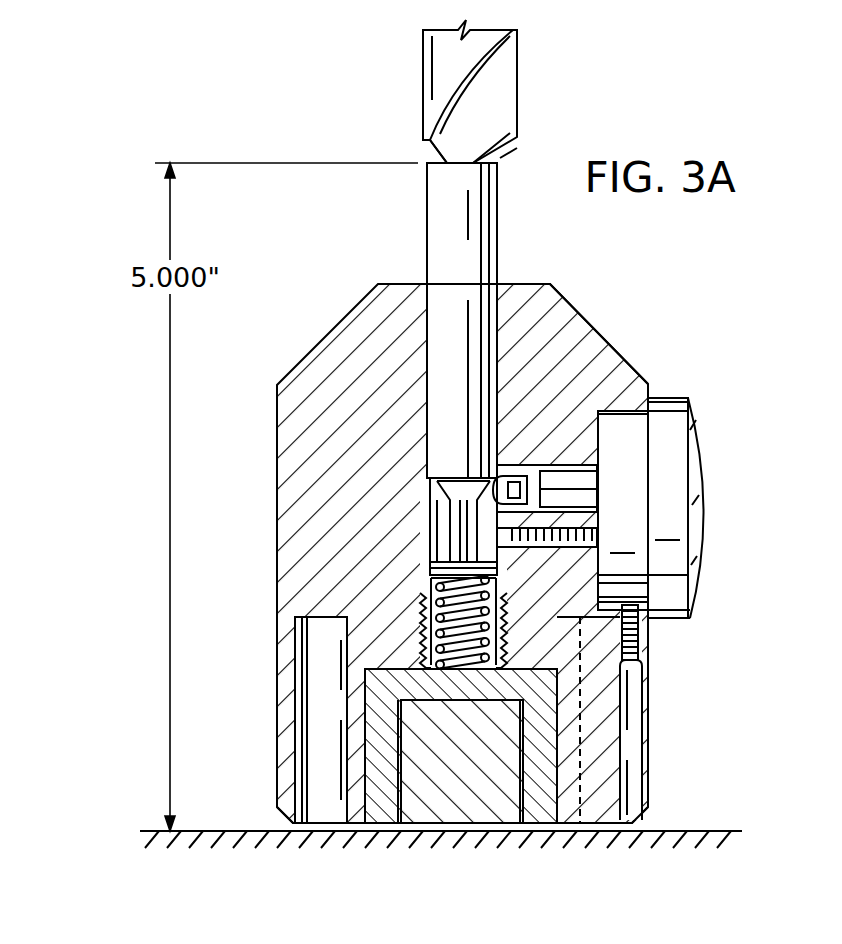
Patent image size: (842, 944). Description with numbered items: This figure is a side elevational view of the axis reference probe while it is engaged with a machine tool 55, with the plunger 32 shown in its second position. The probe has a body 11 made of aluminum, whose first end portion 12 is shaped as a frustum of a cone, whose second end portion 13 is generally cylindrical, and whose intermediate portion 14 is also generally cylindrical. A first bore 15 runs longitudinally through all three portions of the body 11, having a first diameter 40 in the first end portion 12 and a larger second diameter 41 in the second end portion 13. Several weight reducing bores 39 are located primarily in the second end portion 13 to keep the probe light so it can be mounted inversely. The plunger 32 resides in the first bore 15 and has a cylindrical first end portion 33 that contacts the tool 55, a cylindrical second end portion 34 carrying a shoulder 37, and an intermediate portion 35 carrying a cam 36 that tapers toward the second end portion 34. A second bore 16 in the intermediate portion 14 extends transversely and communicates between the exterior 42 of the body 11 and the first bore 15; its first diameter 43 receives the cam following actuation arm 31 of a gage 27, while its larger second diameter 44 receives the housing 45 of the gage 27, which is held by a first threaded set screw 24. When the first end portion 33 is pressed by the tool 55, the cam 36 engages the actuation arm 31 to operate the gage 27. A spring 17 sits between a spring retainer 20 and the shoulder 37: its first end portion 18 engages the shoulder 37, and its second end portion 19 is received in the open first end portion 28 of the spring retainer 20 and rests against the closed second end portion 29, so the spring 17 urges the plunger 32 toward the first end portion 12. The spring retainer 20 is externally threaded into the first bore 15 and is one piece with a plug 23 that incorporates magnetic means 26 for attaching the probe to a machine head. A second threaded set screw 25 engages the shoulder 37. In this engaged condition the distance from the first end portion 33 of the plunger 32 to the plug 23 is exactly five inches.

The body 11 is at (270, 403).
The first end portion of the body 12 is at (558, 296).
The second end portion of the body 13 is at (283, 790).
The intermediate portion of the body 14 is at (272, 577).
The first bore 15 is at (441, 335).
The second bore 16 is at (604, 487).
The spring 17 is at (507, 647).
The first end portion of the spring 18 is at (602, 578).
The second end portion of the spring 19 is at (395, 695).
The spring retainer 20 is at (412, 646).
The plug 23 is at (566, 755).
The first threaded set screw 24 is at (627, 637).
The second threaded set screw 25 is at (500, 553).
The magnetic means 26 is at (462, 806).
The gage 27 is at (705, 595).
The first end portion of the spring retainer 28 is at (422, 603).
The second end portion of the spring retainer 29 is at (523, 694).
The cam following actuation arm 31 is at (515, 478).
The plunger 32 is at (418, 190).
The first end portion of the plunger 33 is at (443, 162).
The second end portion of the plunger 34 is at (465, 580).
The intermediate portion of the plunger 35 is at (445, 436).
The cam 36 is at (432, 493).
The shoulder 37 is at (432, 566).
The weight reducing bores 39 is at (323, 749).
The first diameter of the first bore 40 is at (492, 298).
The second diameter of the first bore 41 is at (381, 788).
The exterior of the body 42 is at (643, 664).
The first diameter of the second bore 43 is at (572, 470).
The second diameter of the second bore 44 is at (667, 399).
The housing of the gage 45 is at (627, 450).
The tool 55 is at (515, 112).